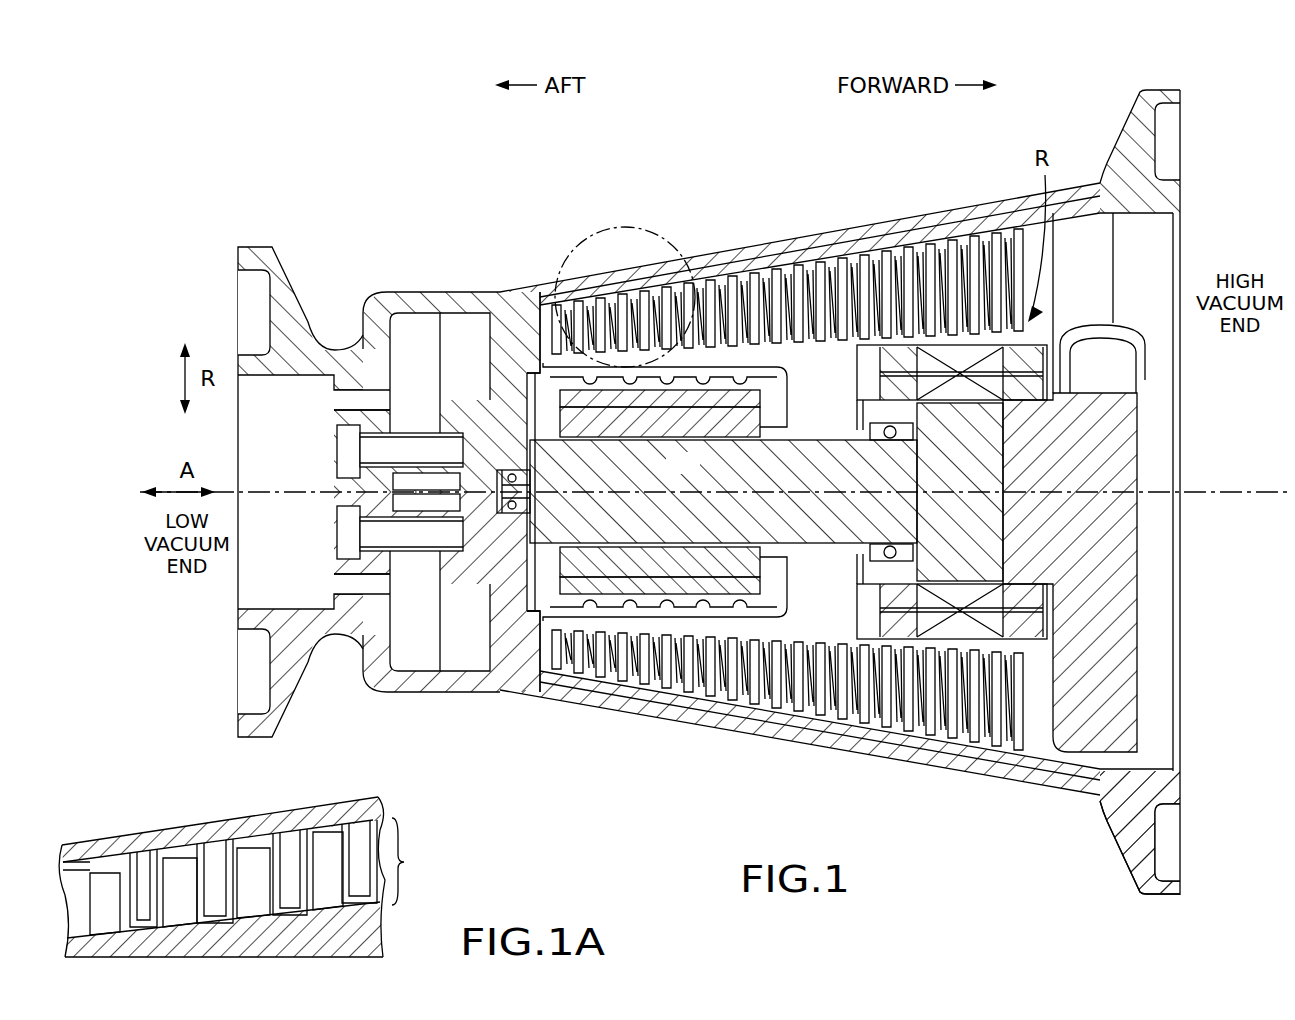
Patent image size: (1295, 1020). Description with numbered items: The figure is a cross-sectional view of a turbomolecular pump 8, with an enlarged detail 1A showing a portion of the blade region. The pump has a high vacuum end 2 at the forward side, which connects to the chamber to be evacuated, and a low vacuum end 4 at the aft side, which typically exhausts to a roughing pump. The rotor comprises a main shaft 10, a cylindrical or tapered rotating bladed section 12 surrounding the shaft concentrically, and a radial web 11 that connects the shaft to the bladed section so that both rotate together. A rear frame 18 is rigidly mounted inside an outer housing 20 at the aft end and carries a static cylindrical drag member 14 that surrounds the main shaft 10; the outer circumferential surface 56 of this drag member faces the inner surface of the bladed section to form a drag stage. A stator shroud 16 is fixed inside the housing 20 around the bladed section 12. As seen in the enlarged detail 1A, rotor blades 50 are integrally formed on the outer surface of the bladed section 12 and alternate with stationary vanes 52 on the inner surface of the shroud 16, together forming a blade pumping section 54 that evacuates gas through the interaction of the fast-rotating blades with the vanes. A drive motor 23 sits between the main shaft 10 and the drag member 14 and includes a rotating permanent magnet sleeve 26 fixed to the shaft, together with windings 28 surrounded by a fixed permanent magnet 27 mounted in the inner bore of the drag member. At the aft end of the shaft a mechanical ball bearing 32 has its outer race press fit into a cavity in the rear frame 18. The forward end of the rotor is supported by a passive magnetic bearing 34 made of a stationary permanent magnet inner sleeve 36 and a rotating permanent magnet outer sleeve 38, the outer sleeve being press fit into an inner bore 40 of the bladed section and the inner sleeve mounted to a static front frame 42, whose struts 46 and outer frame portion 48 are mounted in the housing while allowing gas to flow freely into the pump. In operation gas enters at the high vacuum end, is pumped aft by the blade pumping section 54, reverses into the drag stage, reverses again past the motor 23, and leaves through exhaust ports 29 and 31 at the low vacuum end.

In FIG. 1, the high vacuum end 2 is at (1190, 355).
In FIG. 1, the low vacuum end 4 is at (230, 598).
In FIG. 1, the turbomolecular pump 8 is at (690, 160).
In FIG. 1, the main shaft 10 is at (672, 473).
In FIG. 1, the radial web 11 is at (820, 610).
In FIG. 1, the rotating bladed section 12 is at (727, 357).
In FIG. 1A, the rotating bladed section 12 is at (355, 957).
In FIG. 1, the static cylindrical drag member 14 is at (630, 600).
In FIG. 1, the stator shroud 16 is at (822, 262).
In FIG. 1A, the stator shroud 16 is at (175, 838).
In FIG. 1, the rear frame 18 is at (496, 338).
In FIG. 1, the outer housing 20 is at (372, 291).
In FIG. 1, the drive motor 23 is at (545, 578).
In FIG. 1, the rotating permanent magnet sleeve 26 is at (737, 440).
In FIG. 1, the fixed permanent magnet 27 is at (723, 396).
In FIG. 1, the windings 28 is at (597, 401).
In FIG. 1, the exhaust port 29 is at (497, 377).
In FIG. 1, the exhaust port 31 is at (352, 398).
In FIG. 1, the mechanical ball bearing 32 is at (513, 477).
In FIG. 1, the passive magnetic bearing 34 is at (1003, 560).
In FIG. 1, the stationary permanent magnet inner sleeve 36 is at (993, 395).
In FIG. 1, the rotating permanent magnet outer sleeve 38 is at (987, 353).
In FIG. 1, the inner bore 40 is at (987, 633).
In FIG. 1, the static front frame 42 is at (1110, 493).
In FIG. 1, the struts 46 is at (1125, 652).
In FIG. 1, the outer frame portion 48 is at (1150, 215).
In FIG. 1A, the rotor blades 50 is at (338, 874).
In FIG. 1A, the stationary vanes 52 is at (287, 852).
In FIG. 1A, the blade pumping section 54 is at (413, 861).
In FIG. 1, the outer circumferential surface 56 is at (687, 600).
In FIG. 1, the detail view circle 1A is at (636, 238).